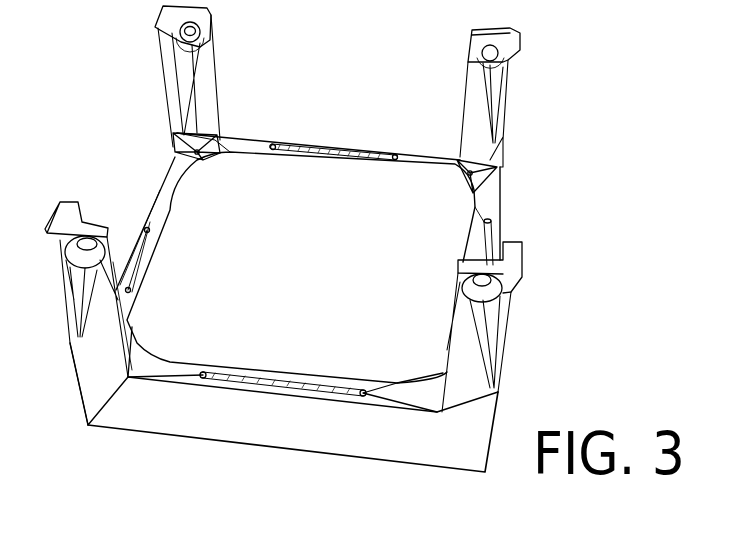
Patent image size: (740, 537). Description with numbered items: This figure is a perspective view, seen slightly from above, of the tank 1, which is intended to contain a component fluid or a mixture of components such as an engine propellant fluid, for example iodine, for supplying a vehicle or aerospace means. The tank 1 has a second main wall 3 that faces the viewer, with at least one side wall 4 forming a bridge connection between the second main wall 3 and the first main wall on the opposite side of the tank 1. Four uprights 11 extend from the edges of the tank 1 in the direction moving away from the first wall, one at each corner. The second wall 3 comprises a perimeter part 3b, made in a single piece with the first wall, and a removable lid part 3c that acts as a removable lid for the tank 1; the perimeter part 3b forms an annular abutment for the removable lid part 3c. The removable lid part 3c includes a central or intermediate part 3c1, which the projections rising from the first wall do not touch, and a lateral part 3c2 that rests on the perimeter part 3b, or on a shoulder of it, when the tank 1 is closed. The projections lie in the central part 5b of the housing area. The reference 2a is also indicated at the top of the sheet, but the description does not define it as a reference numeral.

The tank 1 is at (582, 197).
The housing part 2a is at (642, 0).
The second main wall 3 is at (338, 175).
The perimeter part 3b is at (487, 213).
The removable lid part 3c is at (385, 192).
The central or intermediate part 3c1 is at (288, 177).
The lateral part 3c2 is at (175, 220).
The side wall 4 is at (188, 425).
The central part 5b is at (739, 12).
The uprights 11 is at (495, 92).